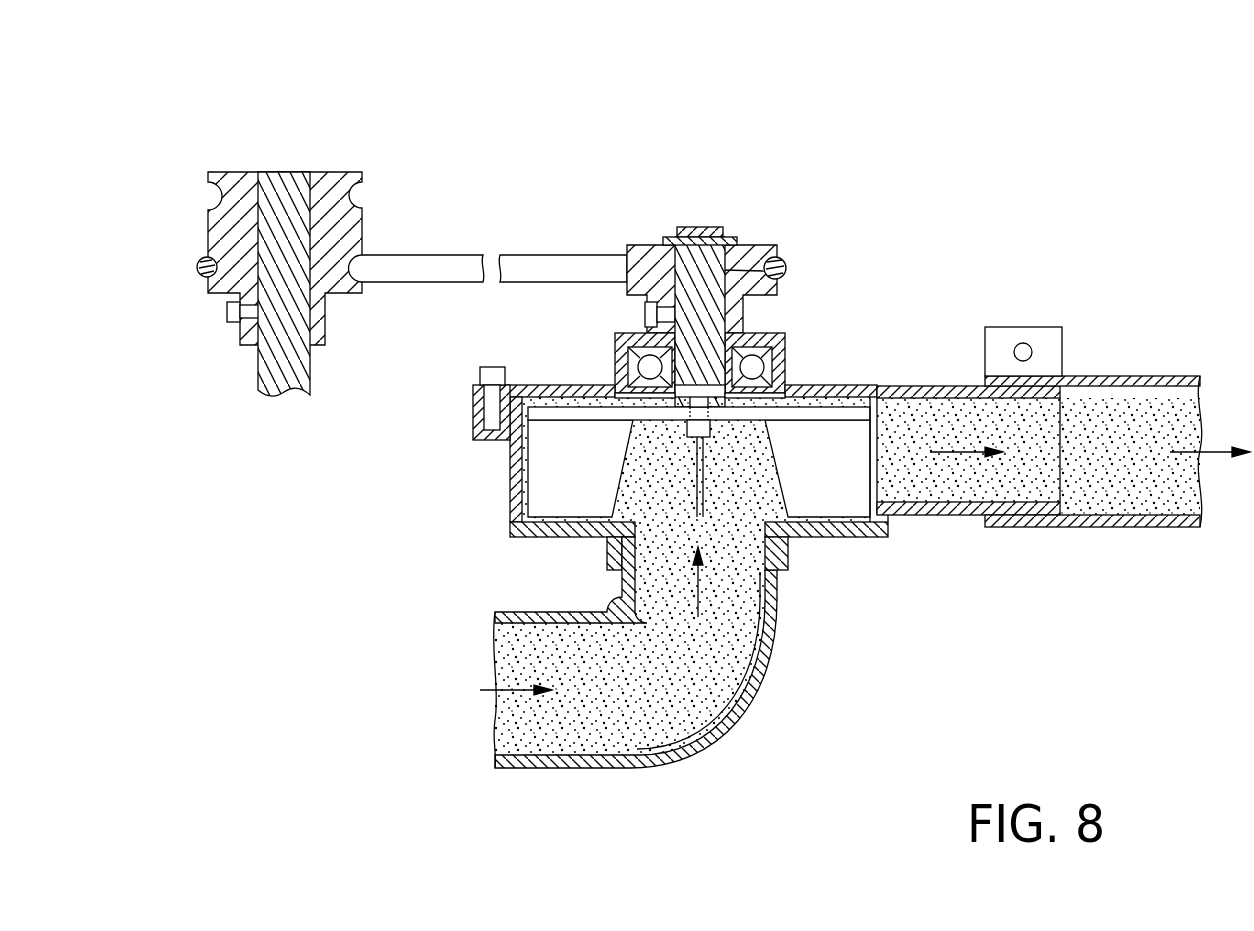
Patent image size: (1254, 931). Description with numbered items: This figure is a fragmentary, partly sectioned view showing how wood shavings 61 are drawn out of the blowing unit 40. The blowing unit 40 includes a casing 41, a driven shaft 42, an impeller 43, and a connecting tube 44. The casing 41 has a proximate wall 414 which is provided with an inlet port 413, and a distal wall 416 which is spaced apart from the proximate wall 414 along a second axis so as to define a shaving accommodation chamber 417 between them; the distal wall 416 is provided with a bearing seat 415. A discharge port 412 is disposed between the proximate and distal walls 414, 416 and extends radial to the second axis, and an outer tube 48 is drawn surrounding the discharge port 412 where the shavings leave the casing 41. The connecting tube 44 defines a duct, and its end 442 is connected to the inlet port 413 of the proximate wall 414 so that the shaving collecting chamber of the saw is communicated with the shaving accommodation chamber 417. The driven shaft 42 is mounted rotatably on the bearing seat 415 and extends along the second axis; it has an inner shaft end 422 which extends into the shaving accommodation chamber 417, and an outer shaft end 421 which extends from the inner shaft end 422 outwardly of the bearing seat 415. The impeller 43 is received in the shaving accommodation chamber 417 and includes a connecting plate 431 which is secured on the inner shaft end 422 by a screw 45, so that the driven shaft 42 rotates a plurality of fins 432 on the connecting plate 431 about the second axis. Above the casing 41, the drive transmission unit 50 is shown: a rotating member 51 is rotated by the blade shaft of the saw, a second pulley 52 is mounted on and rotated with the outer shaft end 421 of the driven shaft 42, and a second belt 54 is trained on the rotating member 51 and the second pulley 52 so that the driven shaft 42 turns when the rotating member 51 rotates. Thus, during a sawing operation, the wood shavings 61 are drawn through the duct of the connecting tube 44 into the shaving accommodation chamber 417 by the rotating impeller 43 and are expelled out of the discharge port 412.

The blowing unit 40 is at (943, 372).
The casing 41 is at (510, 494).
The discharge port 412 is at (966, 516).
The inlet port 413 is at (608, 548).
The proximate wall 414 is at (557, 528).
The bearing seat 415 is at (617, 340).
The distal wall 416 is at (572, 388).
The shaving accommodation chamber 417 is at (763, 505).
The driven shaft 42 is at (768, 264).
The outer shaft end 421 is at (695, 227).
The inner shaft end 422 is at (757, 362).
The impeller 43 is at (848, 538).
The connecting plate 431 is at (803, 384).
The fins 432 is at (857, 458).
The connecting tube 44 is at (702, 738).
The end of connecting tube 442 is at (620, 586).
The screw 45 is at (697, 365).
The outer outlet tube 48 is at (1057, 528).
The drive transmission unit 50 is at (285, 160).
The rotating member 51 is at (215, 233).
The second pulley 52 is at (752, 245).
The second belt 54 is at (553, 255).
The wood shavings 61 is at (730, 655).